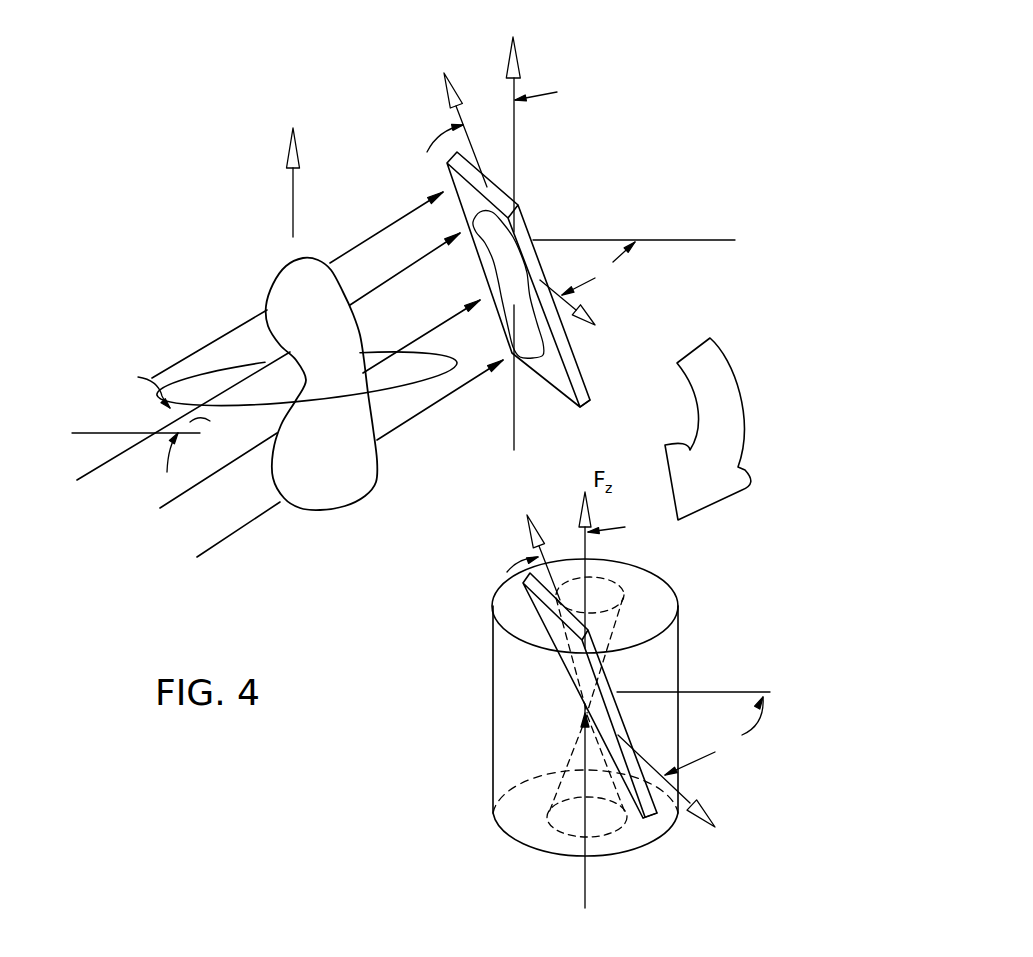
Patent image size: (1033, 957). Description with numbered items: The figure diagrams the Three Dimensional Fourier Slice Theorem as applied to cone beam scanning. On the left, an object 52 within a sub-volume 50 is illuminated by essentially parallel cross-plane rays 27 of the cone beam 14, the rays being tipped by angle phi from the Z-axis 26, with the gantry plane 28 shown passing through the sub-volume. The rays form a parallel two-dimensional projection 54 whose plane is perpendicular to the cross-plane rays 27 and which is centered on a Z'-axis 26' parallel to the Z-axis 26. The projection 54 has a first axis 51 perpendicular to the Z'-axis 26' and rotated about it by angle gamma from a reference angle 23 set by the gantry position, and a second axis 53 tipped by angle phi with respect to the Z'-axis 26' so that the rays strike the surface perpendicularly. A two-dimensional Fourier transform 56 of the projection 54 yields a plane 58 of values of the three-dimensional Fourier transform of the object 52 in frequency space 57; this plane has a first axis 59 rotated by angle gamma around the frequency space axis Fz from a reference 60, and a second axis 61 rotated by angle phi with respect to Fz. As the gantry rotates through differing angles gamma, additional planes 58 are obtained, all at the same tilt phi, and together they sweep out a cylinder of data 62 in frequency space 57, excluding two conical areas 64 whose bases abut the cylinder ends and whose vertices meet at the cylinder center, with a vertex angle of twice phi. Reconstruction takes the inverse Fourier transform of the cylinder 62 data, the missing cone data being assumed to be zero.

The cone beam 14 is at (220, 553).
The reference angle 23 is at (683, 240).
The Z-axis 26 is at (271, 182).
The Z'-axis 26' is at (555, 241).
The cross-plane rays 27 is at (392, 276).
The gantry plane 28 is at (428, 384).
The sub-volume 50 is at (395, 516).
The first axis 51 is at (550, 292).
The object 52 is at (313, 498).
The second axis 53 is at (475, 149).
The two-dimensional projection 54 is at (573, 370).
The two-dimensional Fourier transform 56 is at (737, 420).
The frequency space 57 is at (707, 637).
The plane 58 is at (658, 820).
The first axis 59 is at (642, 755).
The reference 60 is at (740, 692).
The second axis 61 is at (530, 538).
The cylinder of data 62 is at (492, 752).
The conical areas 64 is at (622, 582).